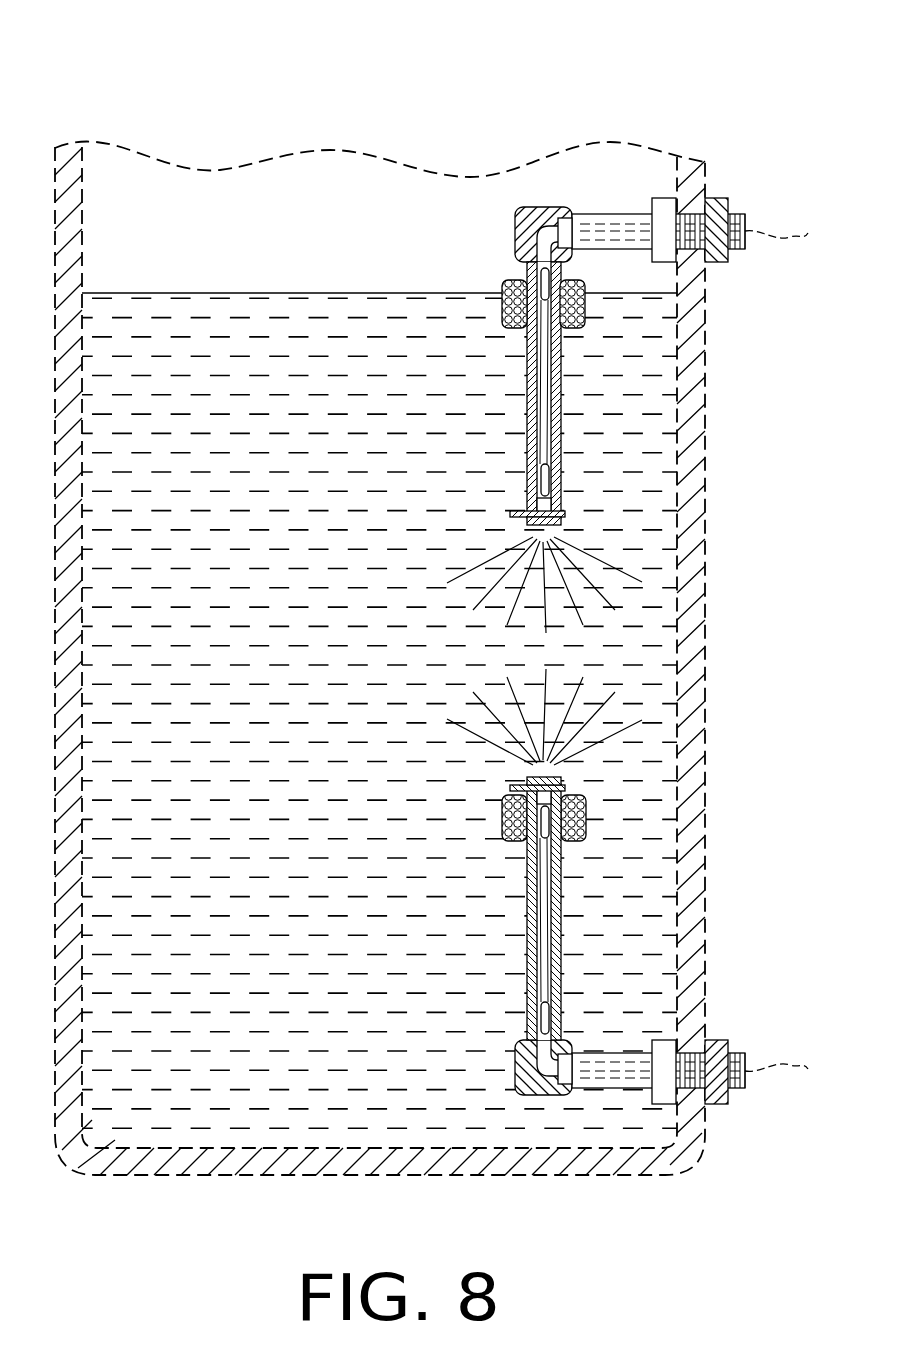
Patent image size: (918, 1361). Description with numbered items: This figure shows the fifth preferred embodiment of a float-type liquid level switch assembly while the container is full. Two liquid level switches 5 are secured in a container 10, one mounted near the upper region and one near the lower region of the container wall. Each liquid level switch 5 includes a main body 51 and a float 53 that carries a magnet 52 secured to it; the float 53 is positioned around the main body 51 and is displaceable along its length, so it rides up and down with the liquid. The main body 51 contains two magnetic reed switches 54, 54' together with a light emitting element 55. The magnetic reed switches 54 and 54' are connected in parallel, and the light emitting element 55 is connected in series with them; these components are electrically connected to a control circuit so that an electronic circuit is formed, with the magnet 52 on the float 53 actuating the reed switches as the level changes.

The liquid level switch 5 is at (619, 552).
The container 10 is at (705, 682).
The main body 51 is at (523, 275).
The magnet 52 is at (580, 302).
The float 53 is at (572, 318).
The magnetic reed switch 54 is at (661, 271).
The magnetic reed switch 54' is at (708, 491).
The light emitting element 55 is at (565, 514).